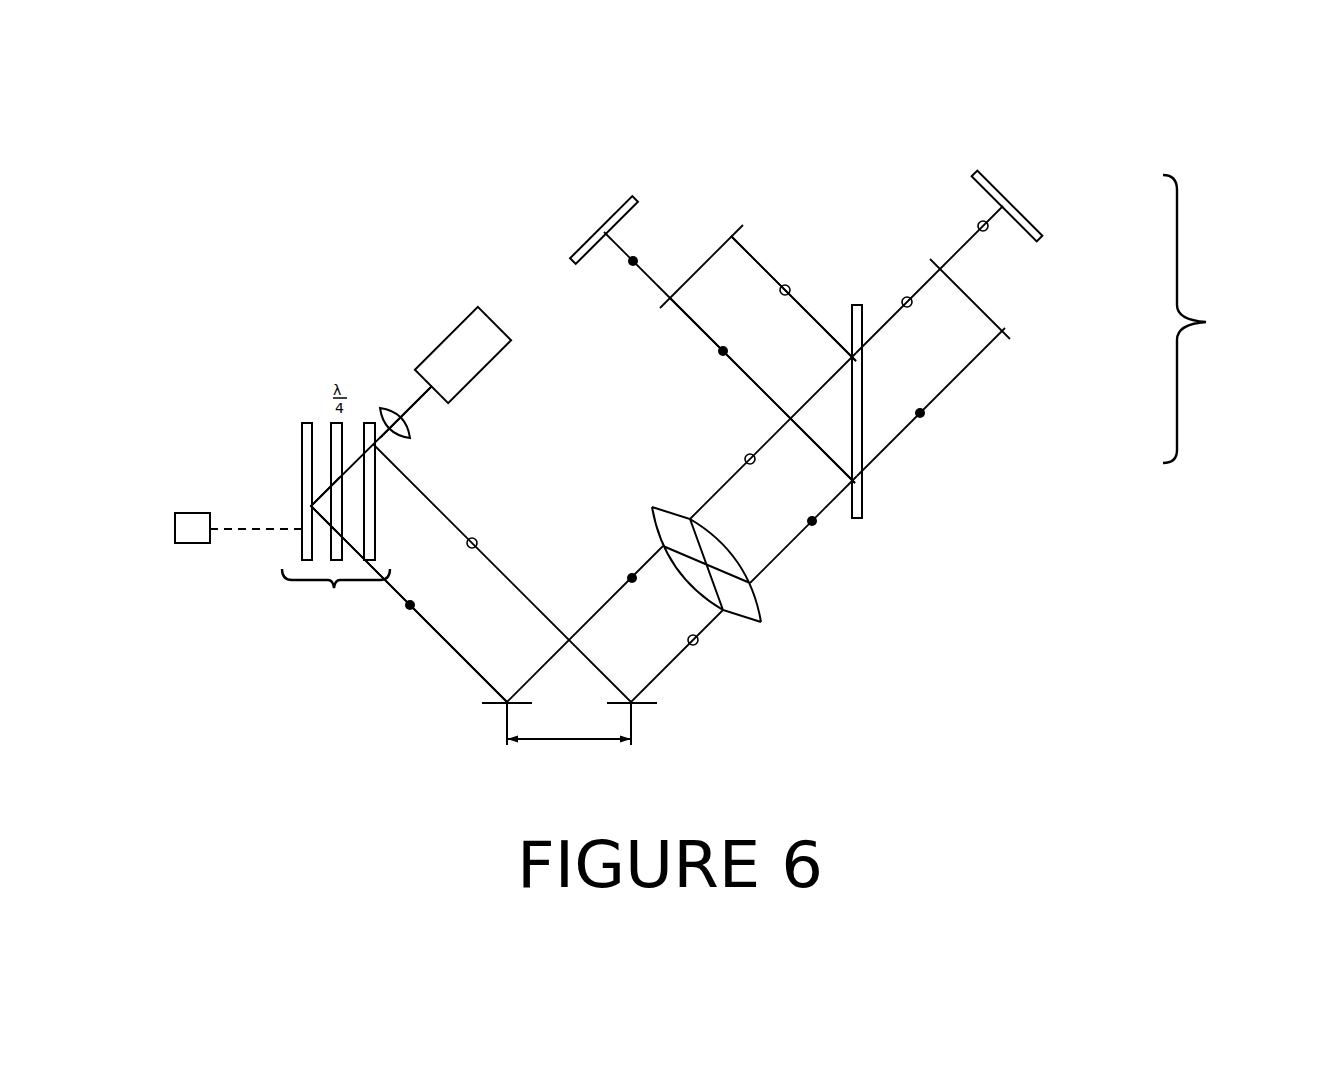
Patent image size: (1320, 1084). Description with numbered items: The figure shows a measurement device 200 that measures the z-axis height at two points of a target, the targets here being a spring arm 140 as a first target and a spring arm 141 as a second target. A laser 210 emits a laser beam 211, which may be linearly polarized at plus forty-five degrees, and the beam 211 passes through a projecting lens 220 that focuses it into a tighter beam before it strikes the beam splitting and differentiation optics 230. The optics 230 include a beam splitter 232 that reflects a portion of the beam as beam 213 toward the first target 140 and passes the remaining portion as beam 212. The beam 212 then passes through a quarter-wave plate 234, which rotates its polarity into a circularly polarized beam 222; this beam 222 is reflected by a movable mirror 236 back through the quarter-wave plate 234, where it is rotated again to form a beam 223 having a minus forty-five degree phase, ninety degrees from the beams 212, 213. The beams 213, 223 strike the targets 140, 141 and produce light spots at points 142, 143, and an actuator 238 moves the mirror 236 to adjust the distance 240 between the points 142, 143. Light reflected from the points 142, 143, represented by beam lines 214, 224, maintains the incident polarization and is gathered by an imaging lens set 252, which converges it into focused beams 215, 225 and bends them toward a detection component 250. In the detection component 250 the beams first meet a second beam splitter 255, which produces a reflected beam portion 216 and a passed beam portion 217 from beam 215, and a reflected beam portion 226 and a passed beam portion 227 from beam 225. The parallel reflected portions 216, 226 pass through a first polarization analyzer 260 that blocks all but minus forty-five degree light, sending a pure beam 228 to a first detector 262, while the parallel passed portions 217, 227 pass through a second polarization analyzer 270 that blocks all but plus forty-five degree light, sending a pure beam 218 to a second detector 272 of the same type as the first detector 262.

The measurement device 200 is at (482, 188).
The laser 210 is at (496, 320).
The laser beam 211 is at (412, 402).
The passed beam portion 212 is at (378, 476).
The reflected split beam 213 is at (495, 564).
The reflected light beam 214 is at (669, 665).
The focused beam 215 is at (717, 491).
The reflected beam portion 216 is at (806, 311).
The passed beam portion 217 is at (886, 325).
The +45 degree beam 218 is at (959, 252).
The projecting lens 220 is at (411, 438).
The circularly polarized beam 222 is at (323, 521).
The second differentiated beam 223 is at (393, 588).
The reflected light beam 224 is at (595, 613).
The focused beam 225 is at (790, 545).
The reflected beam portion 226 is at (755, 382).
The passed beam portion 227 is at (897, 440).
The −45 degree beam 228 is at (650, 278).
The beam splitting and differentiation optics 230 is at (335, 590).
The beam splitter 232 is at (372, 423).
The quarter-wave plate 234 is at (335, 423).
The movable mirror 236 is at (306, 423).
The actuator 238 is at (190, 545).
The distance 240 is at (570, 740).
The detection component 250 is at (1210, 319).
The imaging lens set 252 is at (765, 608).
The second beam splitter 255 is at (863, 490).
The first polarization analyzer 260 is at (706, 263).
The first detector 262 is at (606, 205).
The second polarization analyzer 270 is at (1005, 340).
The second detector 272 is at (1028, 213).
The spring arm 140 is at (644, 705).
The spring arm 141 is at (492, 703).
The light spot point 142 is at (631, 702).
The light spot point 143 is at (507, 702).